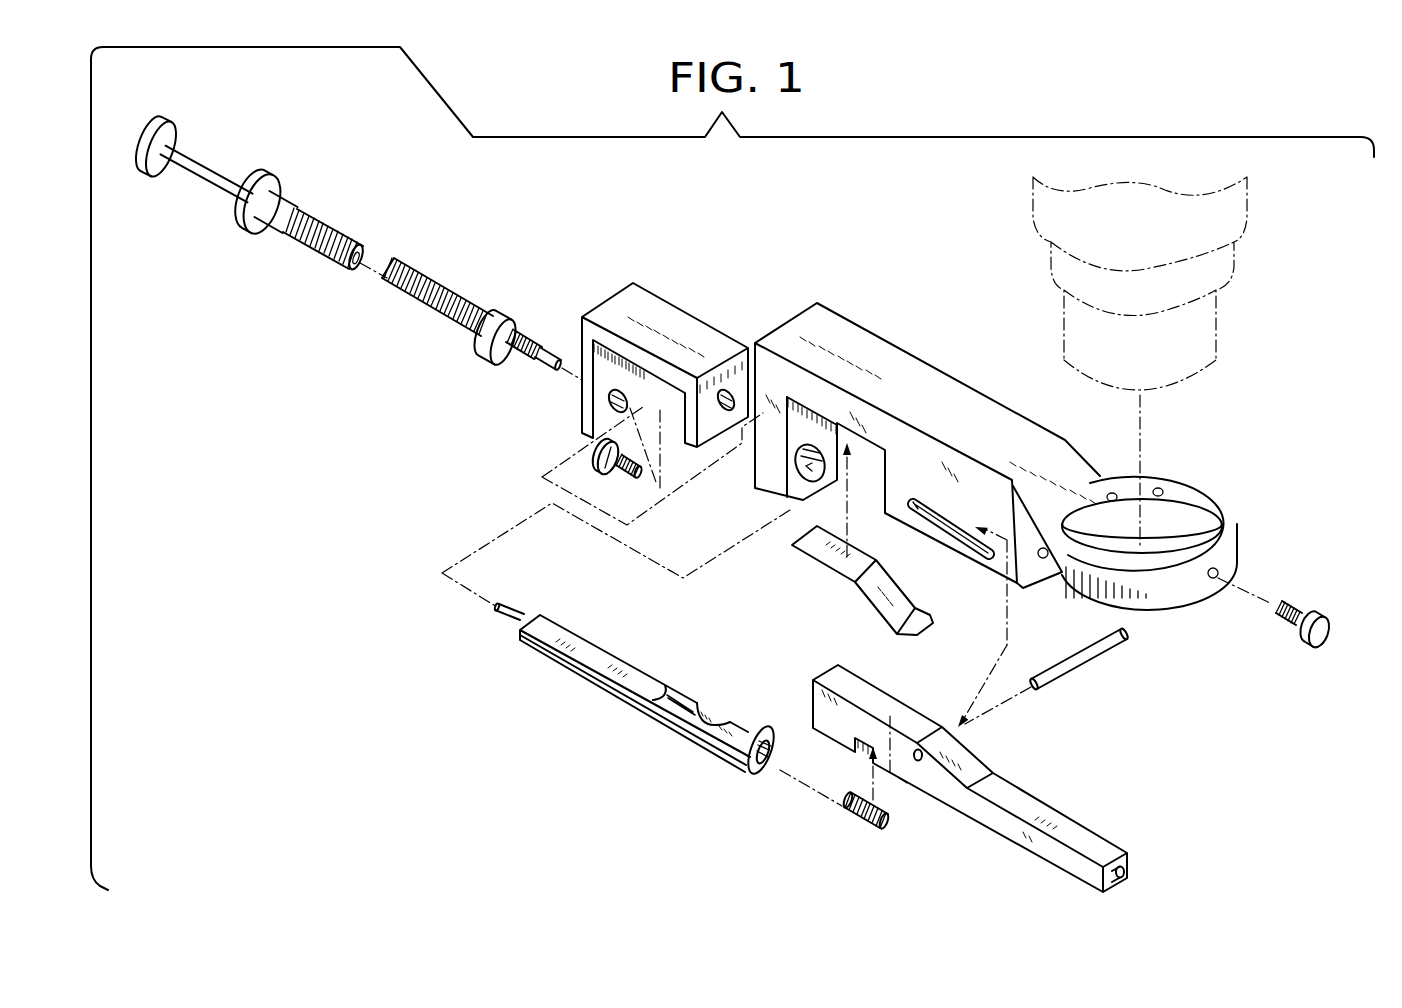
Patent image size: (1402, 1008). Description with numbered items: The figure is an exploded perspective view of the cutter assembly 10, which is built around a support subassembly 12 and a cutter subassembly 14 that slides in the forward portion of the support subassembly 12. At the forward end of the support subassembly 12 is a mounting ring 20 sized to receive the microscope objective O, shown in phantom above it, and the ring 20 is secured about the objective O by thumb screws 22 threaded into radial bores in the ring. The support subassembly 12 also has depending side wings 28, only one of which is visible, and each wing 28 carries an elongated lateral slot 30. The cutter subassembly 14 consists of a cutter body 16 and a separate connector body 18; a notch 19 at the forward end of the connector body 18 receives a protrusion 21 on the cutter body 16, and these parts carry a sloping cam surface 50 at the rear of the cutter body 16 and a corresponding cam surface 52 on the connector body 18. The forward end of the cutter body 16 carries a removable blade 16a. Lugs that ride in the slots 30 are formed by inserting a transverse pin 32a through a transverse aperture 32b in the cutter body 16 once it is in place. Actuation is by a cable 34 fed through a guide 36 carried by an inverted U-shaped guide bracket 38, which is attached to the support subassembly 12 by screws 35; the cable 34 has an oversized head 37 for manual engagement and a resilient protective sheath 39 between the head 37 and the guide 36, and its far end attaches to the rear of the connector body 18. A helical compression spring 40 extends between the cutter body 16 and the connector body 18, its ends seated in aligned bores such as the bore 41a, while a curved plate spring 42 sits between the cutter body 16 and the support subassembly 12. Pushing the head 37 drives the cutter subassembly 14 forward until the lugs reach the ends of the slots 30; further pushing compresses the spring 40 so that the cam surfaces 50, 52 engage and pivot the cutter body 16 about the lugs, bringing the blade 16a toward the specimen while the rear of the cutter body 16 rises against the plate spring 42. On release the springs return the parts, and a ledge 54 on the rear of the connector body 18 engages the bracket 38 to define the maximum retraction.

The cutter assembly 10 is at (697, 264).
The microscope objective O is at (1240, 208).
The support subassembly 12 is at (855, 304).
The cutter subassembly 14 is at (432, 472).
The cutter body 16 is at (1040, 802).
The blade 16a is at (1098, 890).
The connector body 18 is at (600, 664).
The notch 19 is at (735, 715).
The forward mounting ring 20 is at (1214, 488).
The protrusion 21 is at (818, 668).
The thumb screws 22 is at (1298, 612).
The side wing 28 is at (895, 500).
The lateral slot 30 is at (935, 522).
The transverse pin 32a is at (1108, 652).
The transverse aperture 32b is at (920, 765).
The actuator cable 34 is at (215, 176).
The screws 35 is at (630, 478).
The guide 36 is at (502, 318).
The head portion 37 is at (175, 126).
The guide bracket 38 is at (653, 310).
The protective sheath 39 is at (330, 225).
The helical compression spring 40 is at (868, 832).
The bore 41a is at (764, 772).
The plate spring 42 is at (905, 612).
The sloping cam surface 50 is at (815, 729).
The cam surface 52 is at (716, 706).
The ledge 54 is at (672, 683).